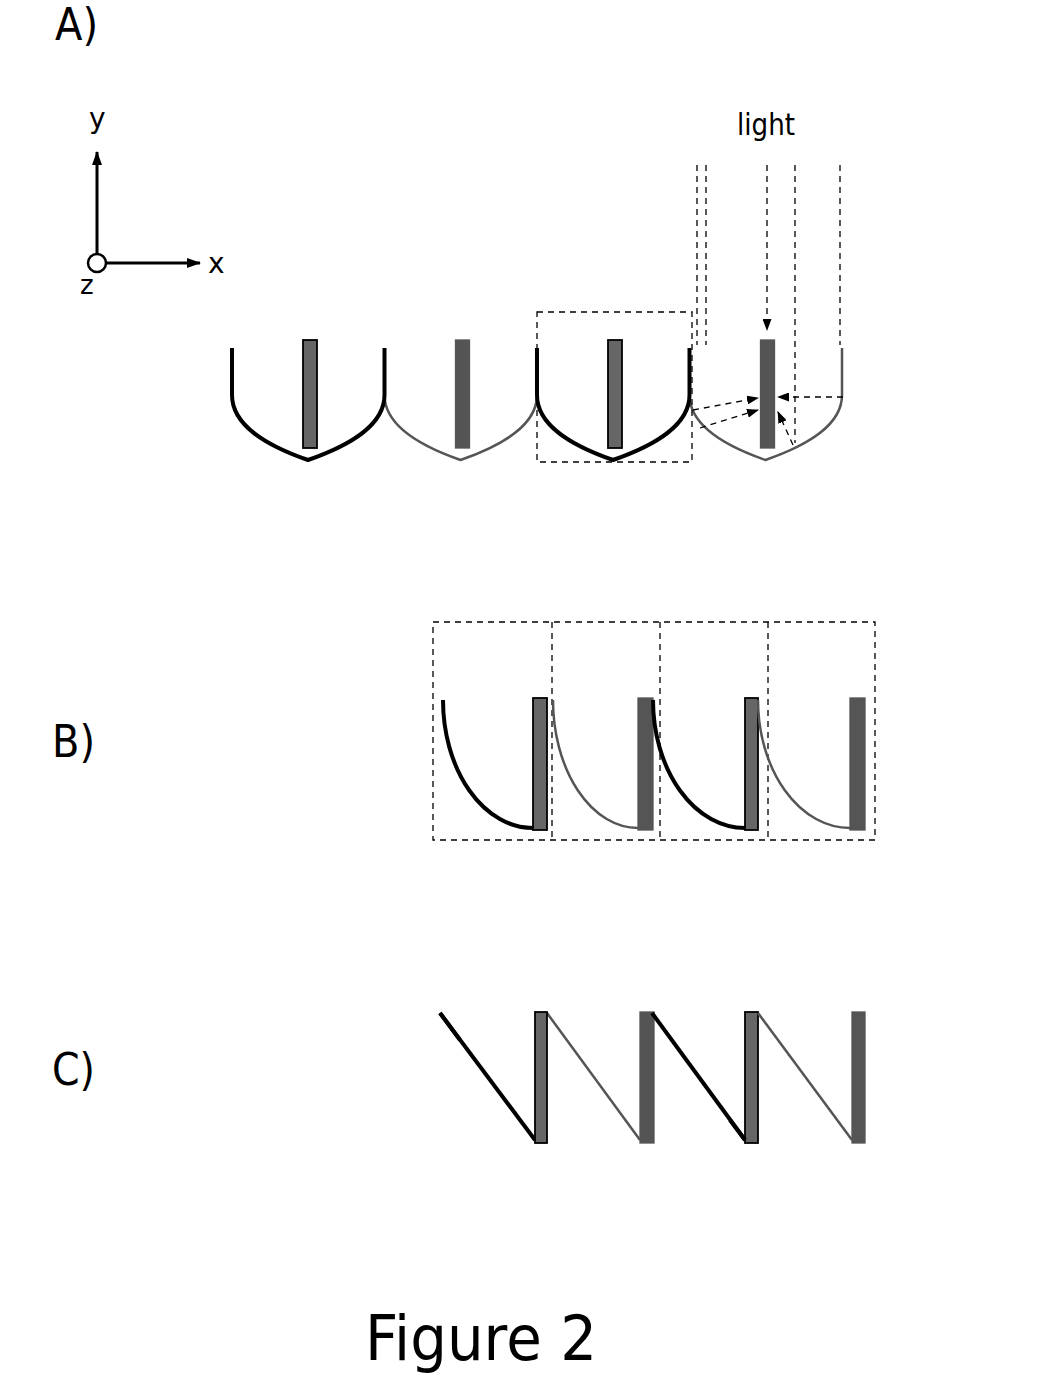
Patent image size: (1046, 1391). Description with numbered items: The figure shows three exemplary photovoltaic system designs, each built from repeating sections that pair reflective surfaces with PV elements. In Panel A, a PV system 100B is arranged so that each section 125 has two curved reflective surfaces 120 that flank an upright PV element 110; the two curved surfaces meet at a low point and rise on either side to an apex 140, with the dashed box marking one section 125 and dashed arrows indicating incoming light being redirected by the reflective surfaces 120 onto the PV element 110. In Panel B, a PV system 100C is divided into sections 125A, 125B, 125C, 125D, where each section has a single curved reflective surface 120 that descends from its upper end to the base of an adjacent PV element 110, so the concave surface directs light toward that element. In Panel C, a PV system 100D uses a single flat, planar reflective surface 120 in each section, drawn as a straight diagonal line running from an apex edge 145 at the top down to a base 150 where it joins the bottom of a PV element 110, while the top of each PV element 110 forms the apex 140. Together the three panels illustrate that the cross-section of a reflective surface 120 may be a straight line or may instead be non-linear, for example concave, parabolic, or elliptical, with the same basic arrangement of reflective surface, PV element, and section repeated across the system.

The PV system 100B is at (452, 110).
The PV element 110 is at (462, 340).
The reflective surface 120 is at (242, 422).
The section 125 is at (638, 491).
The section 125A is at (522, 667).
The section 125B is at (632, 667).
The section 125C is at (740, 667).
The section 125D is at (850, 667).
The apex 140 is at (539, 343).
The apex edge 145 is at (425, 1000).
The base 150 is at (757, 1152).
The PV system 100C is at (374, 736).
The PV system 100D is at (374, 1078).